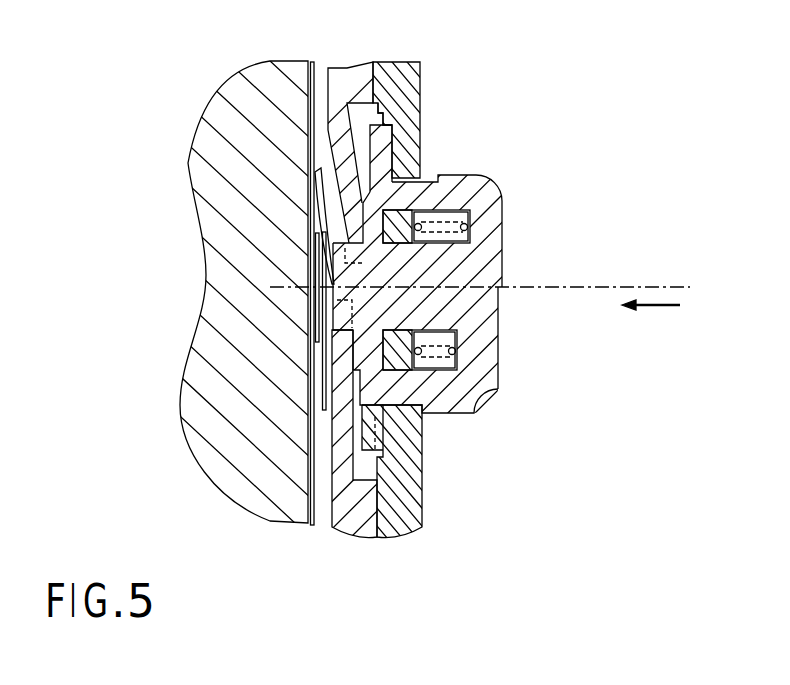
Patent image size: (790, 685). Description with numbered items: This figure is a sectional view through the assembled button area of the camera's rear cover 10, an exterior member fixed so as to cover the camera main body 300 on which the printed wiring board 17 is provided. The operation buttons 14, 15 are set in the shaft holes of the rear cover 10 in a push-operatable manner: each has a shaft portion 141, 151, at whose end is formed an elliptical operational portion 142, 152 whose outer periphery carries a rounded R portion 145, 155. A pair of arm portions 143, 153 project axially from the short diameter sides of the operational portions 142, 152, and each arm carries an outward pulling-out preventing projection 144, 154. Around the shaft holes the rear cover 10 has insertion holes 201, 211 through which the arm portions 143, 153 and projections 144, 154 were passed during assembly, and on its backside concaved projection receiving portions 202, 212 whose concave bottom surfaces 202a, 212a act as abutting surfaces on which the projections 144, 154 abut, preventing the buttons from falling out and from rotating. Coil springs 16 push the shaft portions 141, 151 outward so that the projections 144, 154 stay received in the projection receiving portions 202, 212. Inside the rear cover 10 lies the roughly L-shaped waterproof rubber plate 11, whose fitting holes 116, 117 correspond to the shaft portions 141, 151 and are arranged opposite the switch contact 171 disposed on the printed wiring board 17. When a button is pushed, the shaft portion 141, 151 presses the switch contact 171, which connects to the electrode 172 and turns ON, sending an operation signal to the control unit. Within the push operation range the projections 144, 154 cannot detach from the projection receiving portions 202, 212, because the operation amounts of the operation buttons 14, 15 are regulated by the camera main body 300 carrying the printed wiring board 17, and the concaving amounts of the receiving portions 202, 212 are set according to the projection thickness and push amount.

The rear cover 10 is at (415, 514).
The waterproof rubber plate 11 is at (340, 78).
The operation button 14 is at (395, 300).
The operation button 15 is at (395, 300).
The coil spring 16 is at (460, 360).
The printed wiring board 17 is at (295, 82).
The shaft portion 141 is at (471, 316).
The shaft portion 151 is at (413, 310).
The operational portion 142 is at (568, 244).
The operational portion 152 is at (503, 268).
The arm portion 143 is at (475, 208).
The arm portion 153 is at (420, 195).
The pulling-out preventing projection 144 is at (470, 158).
The pulling-out preventing projection 154 is at (385, 147).
The R portion 145 is at (498, 394).
The R portion 155 is at (491, 400).
The switch contact 171 is at (316, 210).
The electrode 172 is at (316, 260).
The fitting hole 116 is at (226, 288).
The fitting hole 117 is at (330, 300).
The insertion hole 201 is at (200, 321).
The insertion hole 211 is at (322, 342).
The projection receiving portion 202 is at (395, 286).
The projection receiving portion 212 is at (400, 95).
The concave bottom surface 202a is at (501, 104).
The concave bottom surface 212a is at (392, 118).
The camera main body 300 is at (185, 448).